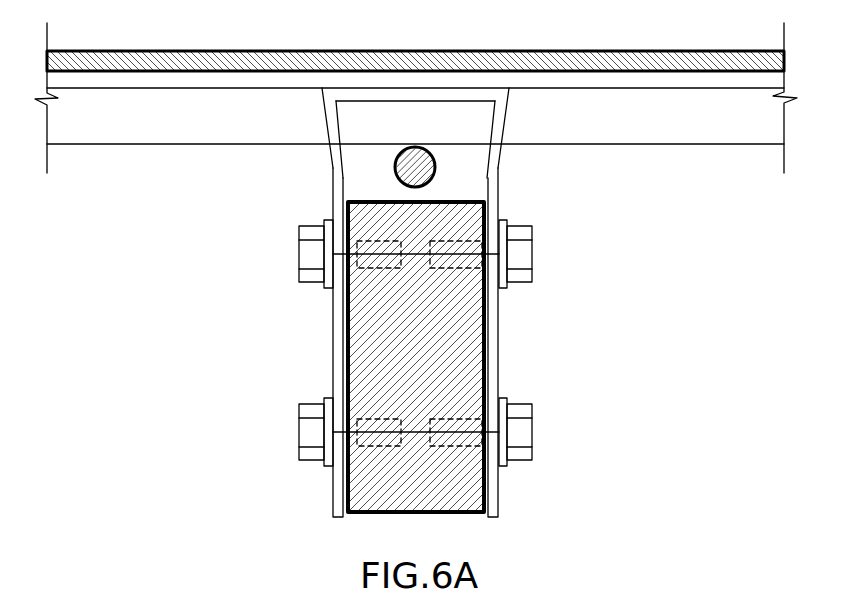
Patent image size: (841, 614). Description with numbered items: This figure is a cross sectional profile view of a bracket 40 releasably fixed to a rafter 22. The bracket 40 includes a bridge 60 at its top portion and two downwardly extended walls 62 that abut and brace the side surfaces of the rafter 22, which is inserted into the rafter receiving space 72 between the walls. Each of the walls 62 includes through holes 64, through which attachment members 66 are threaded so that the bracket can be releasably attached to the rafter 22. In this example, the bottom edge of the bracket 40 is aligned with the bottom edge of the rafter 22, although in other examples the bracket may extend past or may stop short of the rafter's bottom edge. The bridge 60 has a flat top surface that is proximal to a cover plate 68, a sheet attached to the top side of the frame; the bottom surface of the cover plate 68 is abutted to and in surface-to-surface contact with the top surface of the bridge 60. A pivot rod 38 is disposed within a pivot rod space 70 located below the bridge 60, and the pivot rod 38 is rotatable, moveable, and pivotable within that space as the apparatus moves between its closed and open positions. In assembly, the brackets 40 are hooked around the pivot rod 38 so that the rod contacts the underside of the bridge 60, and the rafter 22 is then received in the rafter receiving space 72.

The rafter 22 is at (440, 376).
The pivot rod 38 is at (413, 169).
The bracket 40 is at (413, 268).
The bridge 60 is at (450, 97).
The walls 62 is at (333, 344).
The through holes 64 is at (331, 289).
The attachment members 66 is at (299, 255).
The cover plate 68 is at (513, 67).
The pivot rod space 70 is at (361, 163).
The rafter receiving space 72 is at (462, 496).